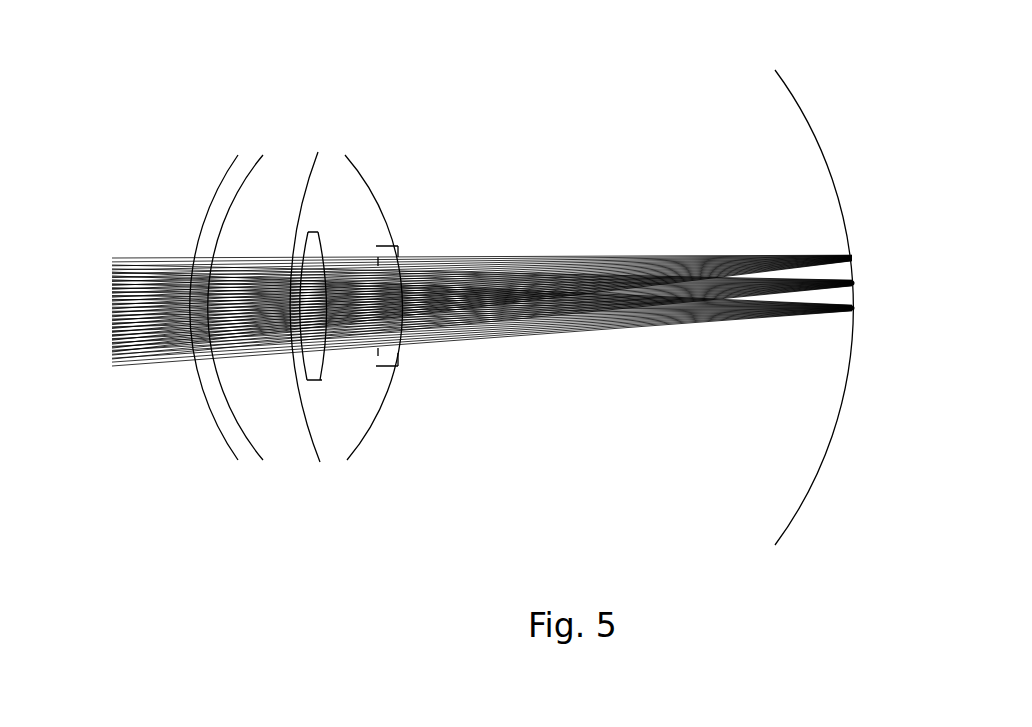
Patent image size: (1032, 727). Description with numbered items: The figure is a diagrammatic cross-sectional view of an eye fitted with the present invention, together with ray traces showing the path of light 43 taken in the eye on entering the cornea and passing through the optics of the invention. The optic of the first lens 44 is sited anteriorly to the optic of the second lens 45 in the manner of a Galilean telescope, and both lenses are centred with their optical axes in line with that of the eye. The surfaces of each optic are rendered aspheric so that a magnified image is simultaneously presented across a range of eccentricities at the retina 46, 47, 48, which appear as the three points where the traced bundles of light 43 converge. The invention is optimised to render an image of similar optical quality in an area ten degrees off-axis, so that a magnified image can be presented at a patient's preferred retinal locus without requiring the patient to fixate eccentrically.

The path of light 43 is at (124, 350).
The first lens 44 is at (318, 222).
The second lens 45 is at (400, 240).
The retina 46 is at (856, 249).
The retina 47 is at (862, 283).
The retina 48 is at (862, 309).